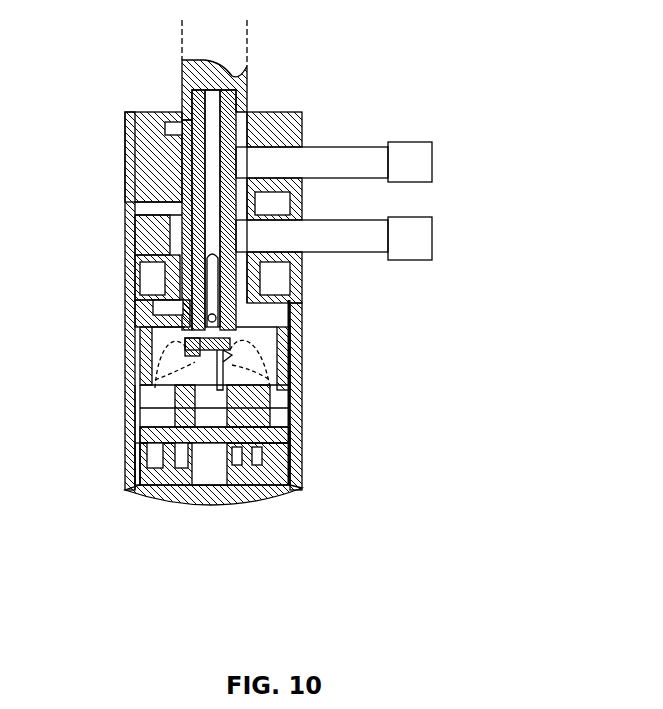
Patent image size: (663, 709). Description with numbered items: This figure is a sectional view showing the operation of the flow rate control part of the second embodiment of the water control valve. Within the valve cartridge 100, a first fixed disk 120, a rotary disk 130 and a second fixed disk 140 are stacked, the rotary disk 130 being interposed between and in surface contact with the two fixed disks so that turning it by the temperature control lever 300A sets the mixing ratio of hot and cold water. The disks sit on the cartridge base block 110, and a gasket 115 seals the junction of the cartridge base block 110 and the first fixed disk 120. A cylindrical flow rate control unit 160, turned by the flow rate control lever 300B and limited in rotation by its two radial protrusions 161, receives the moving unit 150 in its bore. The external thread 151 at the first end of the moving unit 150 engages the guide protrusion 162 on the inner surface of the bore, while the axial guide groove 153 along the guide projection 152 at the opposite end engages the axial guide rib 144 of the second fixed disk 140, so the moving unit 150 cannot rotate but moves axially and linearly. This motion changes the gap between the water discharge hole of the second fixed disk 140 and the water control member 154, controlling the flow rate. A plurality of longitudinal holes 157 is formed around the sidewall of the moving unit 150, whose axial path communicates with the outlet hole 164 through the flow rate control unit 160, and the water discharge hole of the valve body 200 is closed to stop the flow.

The valve cartridge 100 is at (153, 507).
The cartridge base block 110 is at (122, 473).
The gasket 115 is at (122, 447).
The first fixed disk 120 is at (300, 483).
The rotary disk 130 is at (298, 438).
The second fixed disk 140 is at (302, 405).
The axial guide rib 144 is at (275, 487).
The moving unit 150 is at (303, 288).
The external thread 151 is at (300, 243).
The guide projection 152 is at (130, 383).
The axial guide groove 153 is at (303, 383).
The water control member 154 is at (303, 328).
The longitudinal holes 157 is at (302, 348).
The flow rate control unit 160 is at (123, 258).
The radial protrusion 161 is at (122, 302).
The guide protrusion 162 is at (122, 342).
The outlet hole 164 is at (122, 205).
The valve body 200 is at (220, 503).
The temperature control lever 300A is at (375, 232).
The flow rate control lever 300B is at (337, 157).